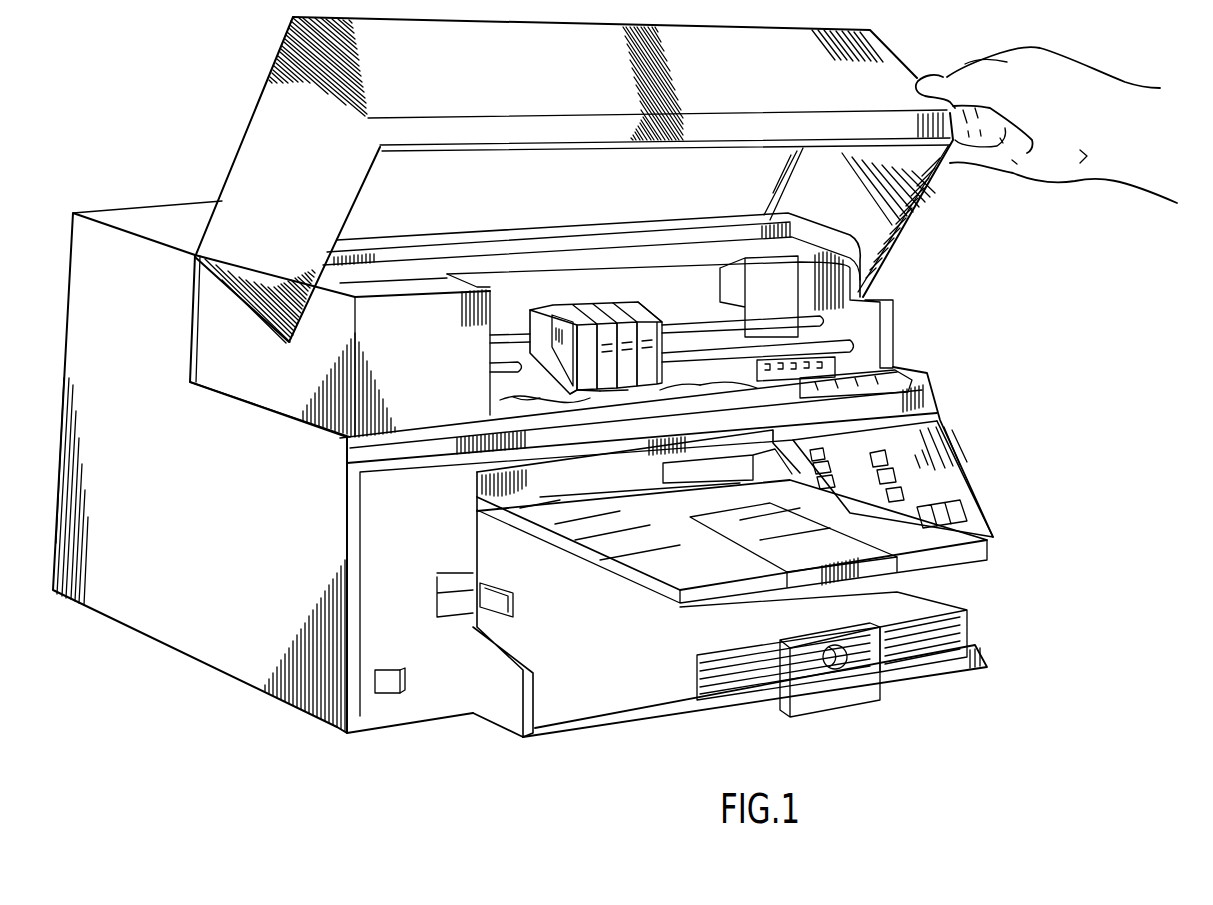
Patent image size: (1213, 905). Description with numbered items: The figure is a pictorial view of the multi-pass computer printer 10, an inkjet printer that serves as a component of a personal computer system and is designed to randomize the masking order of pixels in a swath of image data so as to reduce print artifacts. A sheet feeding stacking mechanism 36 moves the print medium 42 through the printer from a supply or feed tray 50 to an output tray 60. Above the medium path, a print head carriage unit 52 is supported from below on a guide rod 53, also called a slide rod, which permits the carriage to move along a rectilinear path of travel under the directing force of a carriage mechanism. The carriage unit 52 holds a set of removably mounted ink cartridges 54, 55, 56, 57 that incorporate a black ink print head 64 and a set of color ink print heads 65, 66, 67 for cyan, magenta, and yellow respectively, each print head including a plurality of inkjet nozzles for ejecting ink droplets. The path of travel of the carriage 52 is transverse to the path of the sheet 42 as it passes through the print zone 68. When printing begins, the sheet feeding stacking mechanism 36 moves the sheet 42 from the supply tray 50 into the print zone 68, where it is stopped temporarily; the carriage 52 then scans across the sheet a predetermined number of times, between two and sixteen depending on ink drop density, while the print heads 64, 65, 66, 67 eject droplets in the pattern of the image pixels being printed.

The multi-pass computer printer 10 is at (612, 397).
The sheet feeding stacking mechanism 36 is at (612, 712).
The print medium 42 is at (927, 603).
The supply or feed tray 50 is at (950, 673).
The print head carriage unit 52 is at (530, 310).
The guide rod 53 is at (880, 330).
The ink cartridge 54 is at (587, 313).
The ink cartridge 55 is at (603, 330).
The ink cartridge 56 is at (620, 340).
The ink cartridge 57 is at (642, 340).
The output tray 60 is at (990, 542).
The black ink print head 64 is at (530, 318).
The color ink print head 65 is at (513, 397).
The color ink print head 66 is at (607, 403).
The color ink print head 67 is at (628, 392).
The print zone 68 is at (680, 388).